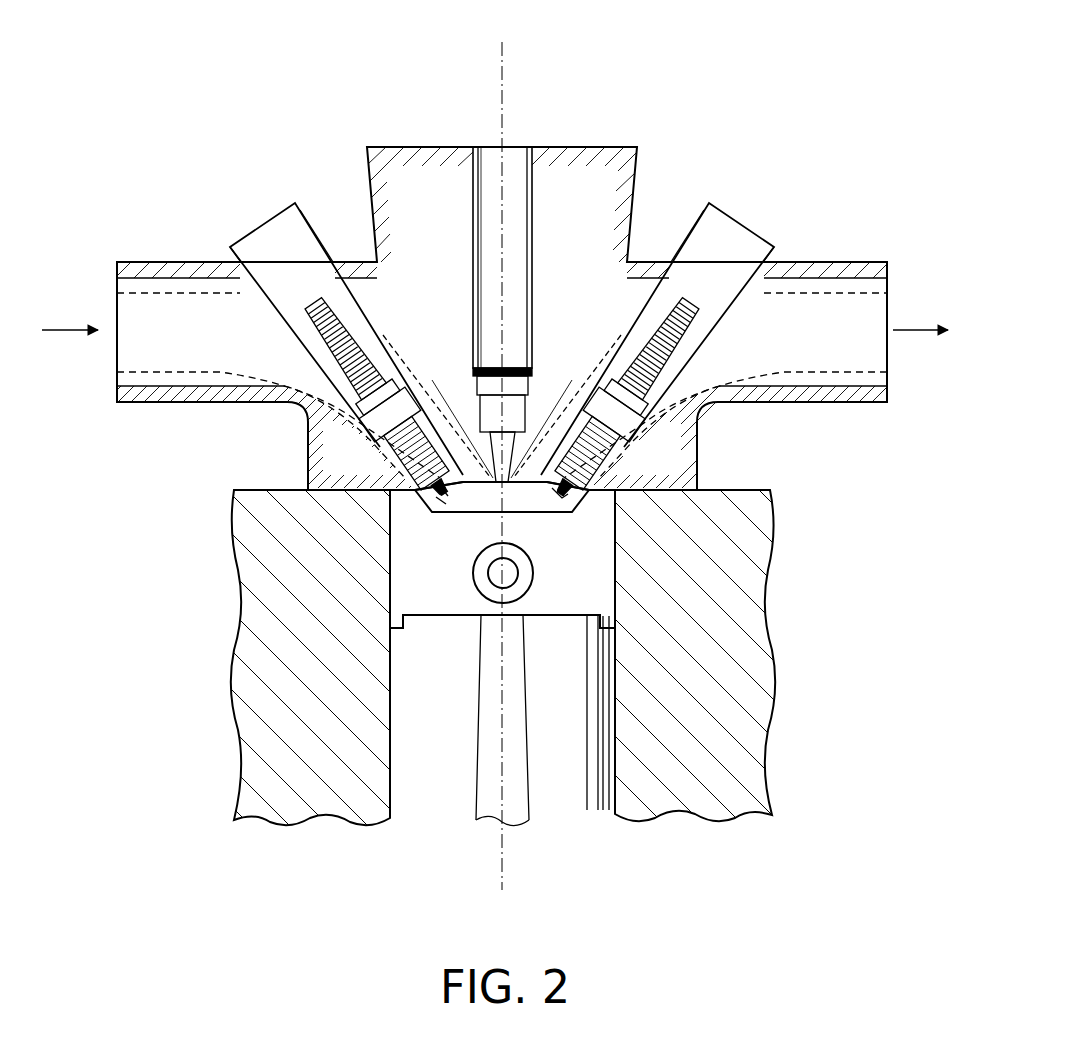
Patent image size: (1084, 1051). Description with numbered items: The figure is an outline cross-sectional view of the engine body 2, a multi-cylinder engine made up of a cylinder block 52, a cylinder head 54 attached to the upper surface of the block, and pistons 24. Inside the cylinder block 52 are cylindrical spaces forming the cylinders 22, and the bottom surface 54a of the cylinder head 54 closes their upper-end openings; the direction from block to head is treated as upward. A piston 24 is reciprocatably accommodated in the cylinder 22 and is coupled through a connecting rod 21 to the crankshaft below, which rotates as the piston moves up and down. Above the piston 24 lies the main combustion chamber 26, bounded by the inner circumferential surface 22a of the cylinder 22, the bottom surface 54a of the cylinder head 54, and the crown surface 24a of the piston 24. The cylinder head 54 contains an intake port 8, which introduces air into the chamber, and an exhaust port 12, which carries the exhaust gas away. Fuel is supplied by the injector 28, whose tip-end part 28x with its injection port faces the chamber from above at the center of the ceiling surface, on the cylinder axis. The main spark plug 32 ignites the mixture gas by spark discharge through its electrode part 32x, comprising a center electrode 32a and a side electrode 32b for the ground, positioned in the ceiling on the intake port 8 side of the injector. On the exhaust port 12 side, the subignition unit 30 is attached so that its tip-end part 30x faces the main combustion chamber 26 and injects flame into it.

The engine body 2 is at (596, 98).
The intake port 8 is at (175, 292).
The exhaust port 12 is at (830, 292).
The connecting rod 21 is at (452, 820).
The cylinder 22 is at (444, 789).
The inner circumferential surface 22a is at (590, 822).
The piston 24 is at (570, 620).
The crown surface 24a is at (567, 507).
The main combustion chamber 26 is at (532, 515).
The injector 28 is at (484, 138).
The tip-end part 28x is at (473, 432).
The subignition unit 30 is at (696, 280).
The tip-end part 30x is at (588, 488).
The main spark plug 32 is at (308, 280).
The electrode part 32x is at (158, 492).
The center electrode 32a is at (438, 490).
The side electrode 32b is at (440, 502).
The cylinder block 52 is at (770, 648).
The cylinder head 54 is at (830, 402).
The bottom surface 54a is at (535, 478).